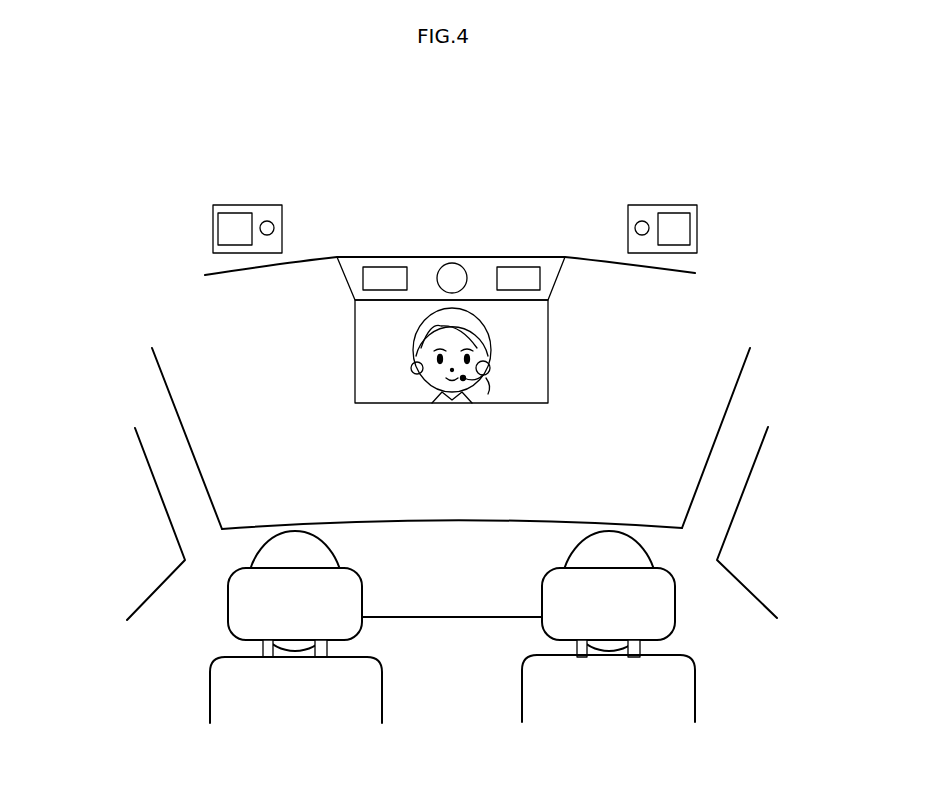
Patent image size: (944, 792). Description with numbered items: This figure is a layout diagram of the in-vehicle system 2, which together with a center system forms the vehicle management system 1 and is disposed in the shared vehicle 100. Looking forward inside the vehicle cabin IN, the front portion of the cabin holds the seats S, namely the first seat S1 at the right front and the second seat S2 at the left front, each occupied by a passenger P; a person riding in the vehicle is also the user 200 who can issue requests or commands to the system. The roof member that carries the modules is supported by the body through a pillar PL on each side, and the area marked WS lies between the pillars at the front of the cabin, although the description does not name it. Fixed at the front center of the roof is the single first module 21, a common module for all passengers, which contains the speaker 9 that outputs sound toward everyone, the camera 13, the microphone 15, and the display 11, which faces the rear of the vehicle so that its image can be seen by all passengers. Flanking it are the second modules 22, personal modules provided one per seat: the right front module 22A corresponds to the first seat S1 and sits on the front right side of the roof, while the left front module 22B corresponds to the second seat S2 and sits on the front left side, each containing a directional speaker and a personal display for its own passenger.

The vehicle management system 1 is at (471, 290).
The in-vehicle system 2 is at (476, 163).
The speaker 9 is at (386, 275).
The display 11 is at (512, 403).
The camera 13 is at (452, 278).
The microphone 15 is at (517, 275).
The first module 21 is at (568, 268).
The second module 22 is at (457, 183).
The right front module 22A is at (685, 183).
The left front module 22B is at (233, 183).
The vehicle 100 is at (769, 471).
The user 200 is at (436, 591).
The windshield WS is at (670, 353).
The pillar PL is at (184, 512).
The passenger P is at (270, 553).
The seat S is at (454, 650).
The first seat S1 is at (657, 692).
The second seat S2 is at (252, 692).
The vehicle cabin IN is at (464, 568).